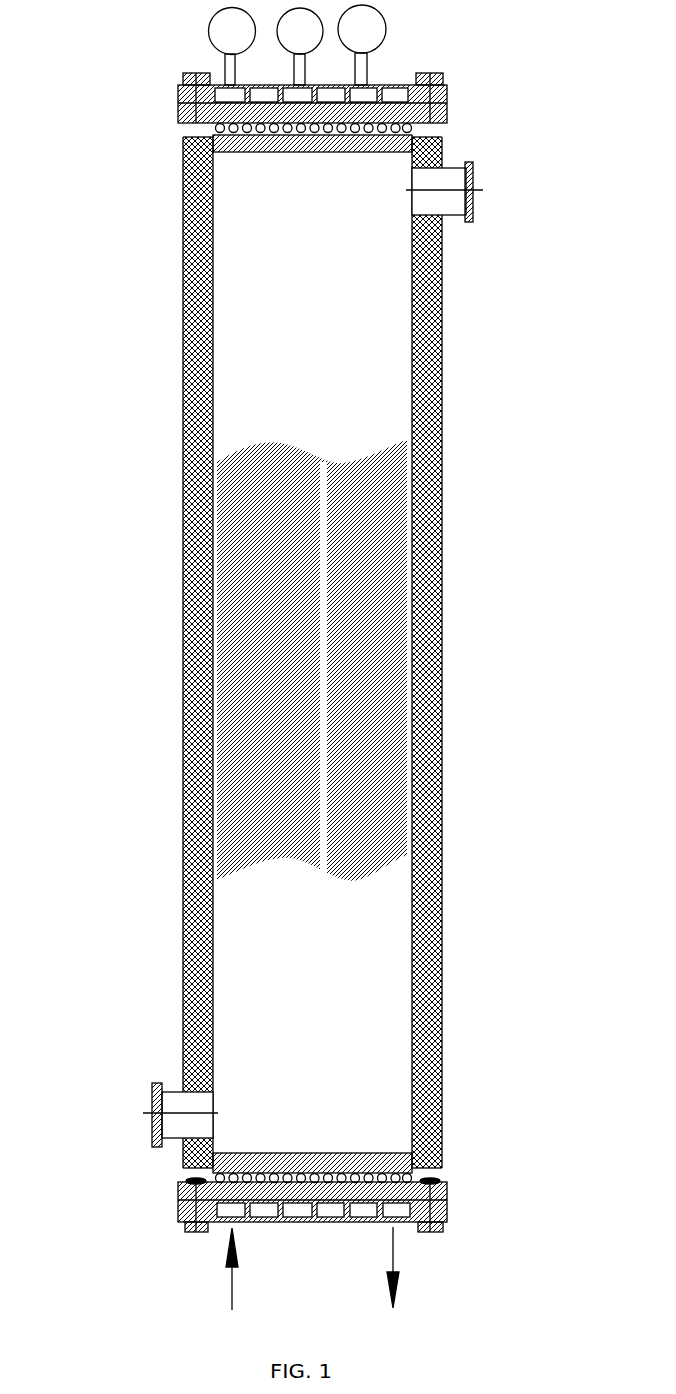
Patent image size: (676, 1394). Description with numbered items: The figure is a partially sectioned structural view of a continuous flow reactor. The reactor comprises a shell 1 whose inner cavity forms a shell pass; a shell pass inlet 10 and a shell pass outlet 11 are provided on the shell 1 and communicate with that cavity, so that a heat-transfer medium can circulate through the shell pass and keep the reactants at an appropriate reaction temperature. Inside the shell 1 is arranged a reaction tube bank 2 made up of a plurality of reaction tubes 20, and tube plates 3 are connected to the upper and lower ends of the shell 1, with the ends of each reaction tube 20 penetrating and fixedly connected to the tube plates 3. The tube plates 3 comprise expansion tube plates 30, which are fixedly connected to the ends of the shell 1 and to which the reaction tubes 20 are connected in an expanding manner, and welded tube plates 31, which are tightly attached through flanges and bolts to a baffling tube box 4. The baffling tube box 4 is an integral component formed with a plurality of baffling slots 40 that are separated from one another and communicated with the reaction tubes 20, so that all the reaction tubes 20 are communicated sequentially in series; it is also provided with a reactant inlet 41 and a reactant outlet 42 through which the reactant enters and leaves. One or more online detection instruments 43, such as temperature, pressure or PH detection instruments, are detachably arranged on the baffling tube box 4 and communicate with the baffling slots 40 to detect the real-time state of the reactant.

The shell 1 is at (297, 629).
The reaction tube bank 2 is at (213, 462).
The tube plates 3 is at (131, 629).
The baffling tube box 4 is at (182, 105).
The shell pass inlet 10 is at (177, 1102).
The shell pass outlet 11 is at (452, 180).
The reaction tubes 20 is at (405, 652).
The expansion tube plates 30 is at (183, 240).
The welded tube plates 31 is at (182, 162).
The baffling slots 40 is at (512, 143).
The reactant inlet 41 is at (227, 1218).
The reactant outlet 42 is at (403, 1232).
The online detection instruments 43 is at (237, 38).